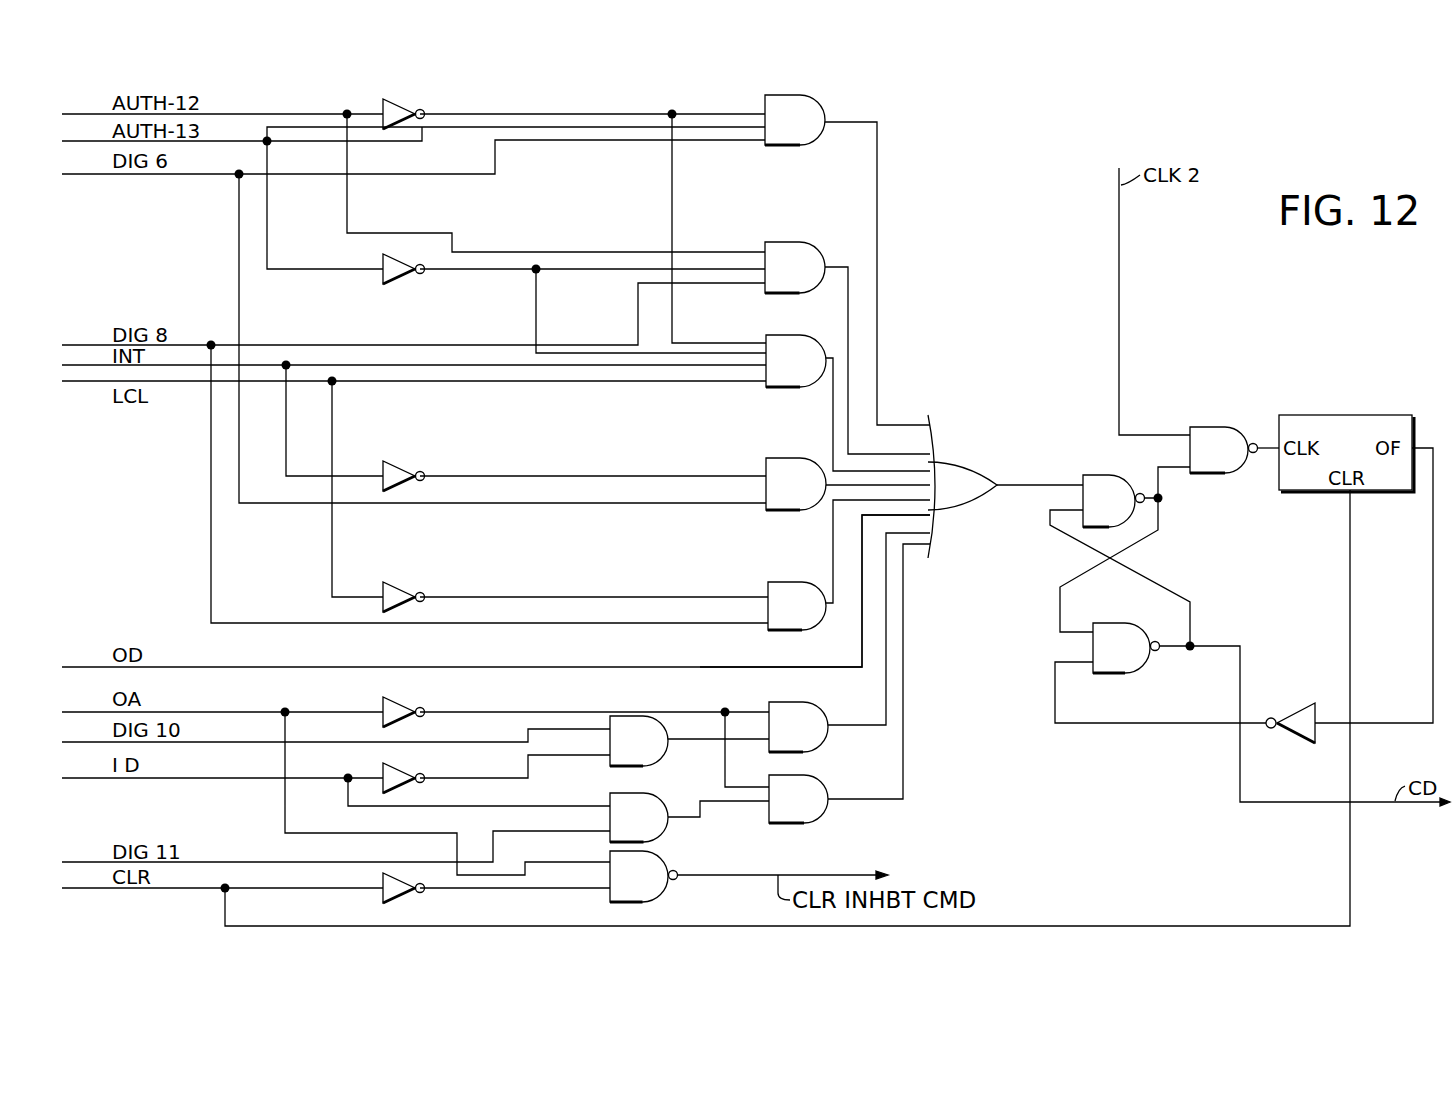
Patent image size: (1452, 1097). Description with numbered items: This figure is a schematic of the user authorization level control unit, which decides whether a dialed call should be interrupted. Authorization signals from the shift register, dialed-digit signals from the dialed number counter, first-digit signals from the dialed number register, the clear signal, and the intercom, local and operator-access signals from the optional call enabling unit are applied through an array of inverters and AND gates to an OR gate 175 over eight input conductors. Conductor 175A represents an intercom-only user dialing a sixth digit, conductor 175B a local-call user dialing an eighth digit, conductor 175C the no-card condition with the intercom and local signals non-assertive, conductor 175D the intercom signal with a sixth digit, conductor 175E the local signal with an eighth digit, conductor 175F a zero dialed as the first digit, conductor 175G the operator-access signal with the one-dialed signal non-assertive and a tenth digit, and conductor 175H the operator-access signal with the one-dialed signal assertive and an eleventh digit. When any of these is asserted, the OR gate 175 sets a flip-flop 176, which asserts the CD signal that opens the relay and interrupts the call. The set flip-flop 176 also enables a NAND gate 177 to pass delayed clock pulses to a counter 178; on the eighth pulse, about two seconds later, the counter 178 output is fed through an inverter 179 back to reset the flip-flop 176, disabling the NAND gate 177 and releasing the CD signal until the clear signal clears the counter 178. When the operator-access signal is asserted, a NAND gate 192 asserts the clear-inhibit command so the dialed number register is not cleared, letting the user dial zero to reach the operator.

The conductor 175A is at (868, 122).
The conductor 175B is at (840, 266).
The conductor 175C is at (828, 357).
The conductor 175D is at (832, 478).
The conductor 175E is at (833, 556).
The conductor 175F is at (770, 667).
The conductor 175G is at (879, 726).
The conductor 175H is at (857, 800).
The OR gate 175 is at (983, 467).
The flip-flop 176 is at (1145, 478).
The NAND gate 177 is at (1210, 430).
The counter 178 is at (1366, 422).
The inverter 179 is at (1304, 712).
The NAND gate 192 is at (660, 884).